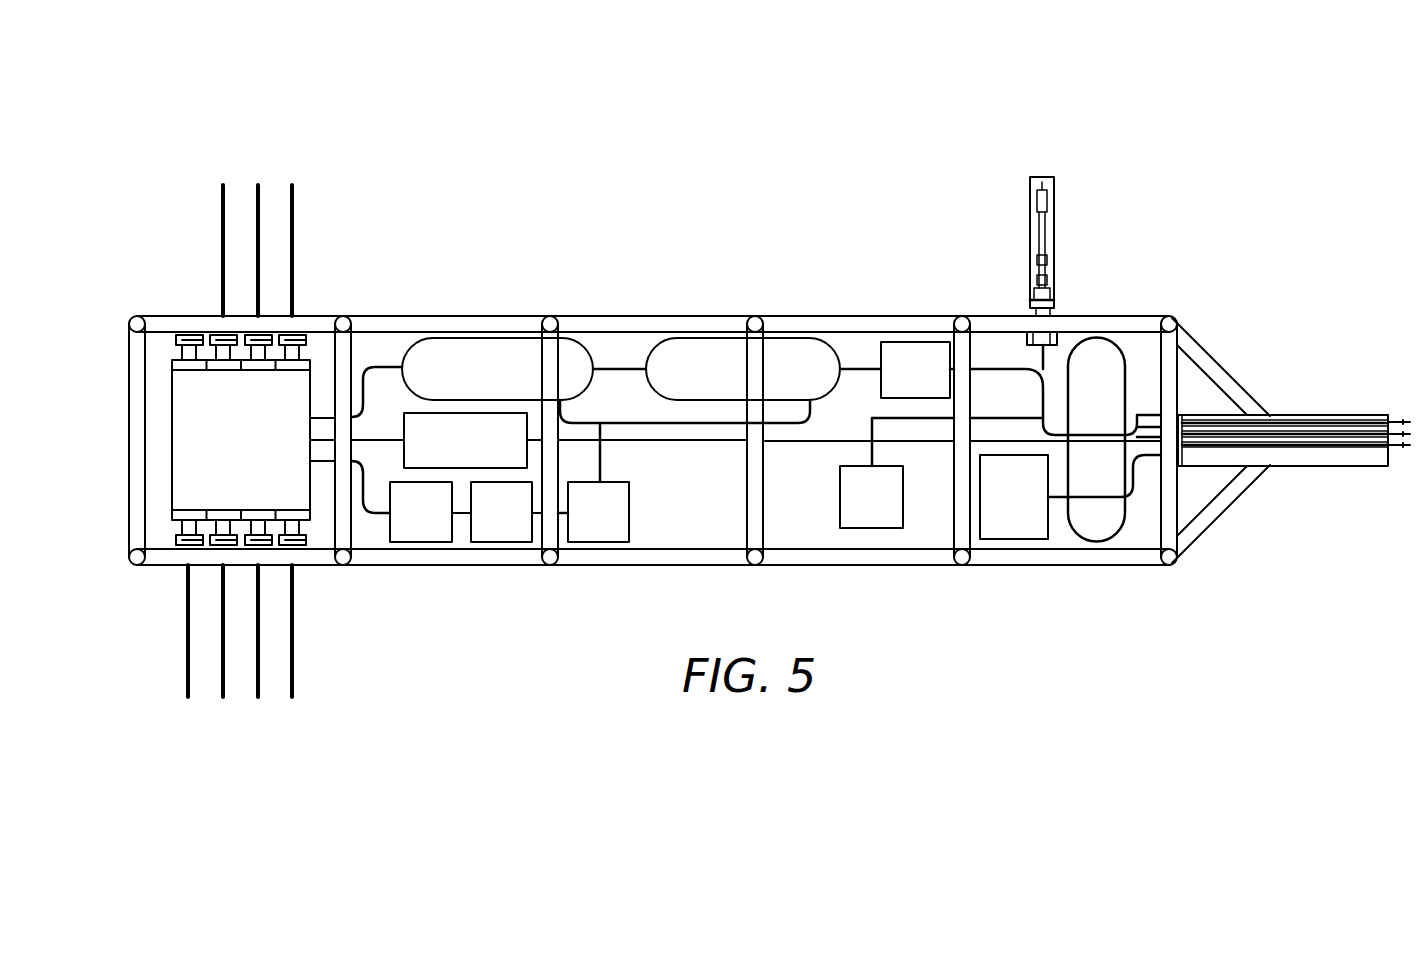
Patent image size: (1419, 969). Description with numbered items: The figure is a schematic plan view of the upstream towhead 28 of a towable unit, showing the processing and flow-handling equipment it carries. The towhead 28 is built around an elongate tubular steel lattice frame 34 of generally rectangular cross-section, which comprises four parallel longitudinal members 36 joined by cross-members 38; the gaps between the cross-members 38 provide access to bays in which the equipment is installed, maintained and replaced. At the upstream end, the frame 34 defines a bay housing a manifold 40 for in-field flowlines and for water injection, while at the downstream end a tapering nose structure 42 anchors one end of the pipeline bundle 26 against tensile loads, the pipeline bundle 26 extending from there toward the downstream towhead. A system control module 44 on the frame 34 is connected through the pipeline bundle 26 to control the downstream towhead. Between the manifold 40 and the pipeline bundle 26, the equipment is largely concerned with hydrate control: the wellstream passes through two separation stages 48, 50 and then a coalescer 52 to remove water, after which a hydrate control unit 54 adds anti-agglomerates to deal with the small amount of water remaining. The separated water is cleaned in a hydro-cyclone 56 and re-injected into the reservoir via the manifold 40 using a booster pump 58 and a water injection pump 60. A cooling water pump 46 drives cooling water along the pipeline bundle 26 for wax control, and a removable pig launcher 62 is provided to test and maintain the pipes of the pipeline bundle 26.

The pipeline bundle 26 is at (1320, 436).
The upstream towhead 28 is at (188, 159).
The frame 34 is at (521, 321).
The longitudinal members 36 is at (714, 320).
The cross-members 38 is at (130, 370).
The manifold 40 is at (180, 442).
The nose structure 42 is at (1223, 503).
The system control module 44 is at (518, 452).
The cooling water pump 46 is at (1015, 530).
The first separation stage 48 is at (441, 352).
The second separation stage 50 is at (800, 352).
The coalescer 52 is at (914, 345).
The hydrate control unit 54 is at (870, 520).
The hydro-cyclone 56 is at (598, 542).
The booster pump 58 is at (503, 542).
The water injection pump 60 is at (421, 542).
The pig launcher 62 is at (1056, 191).